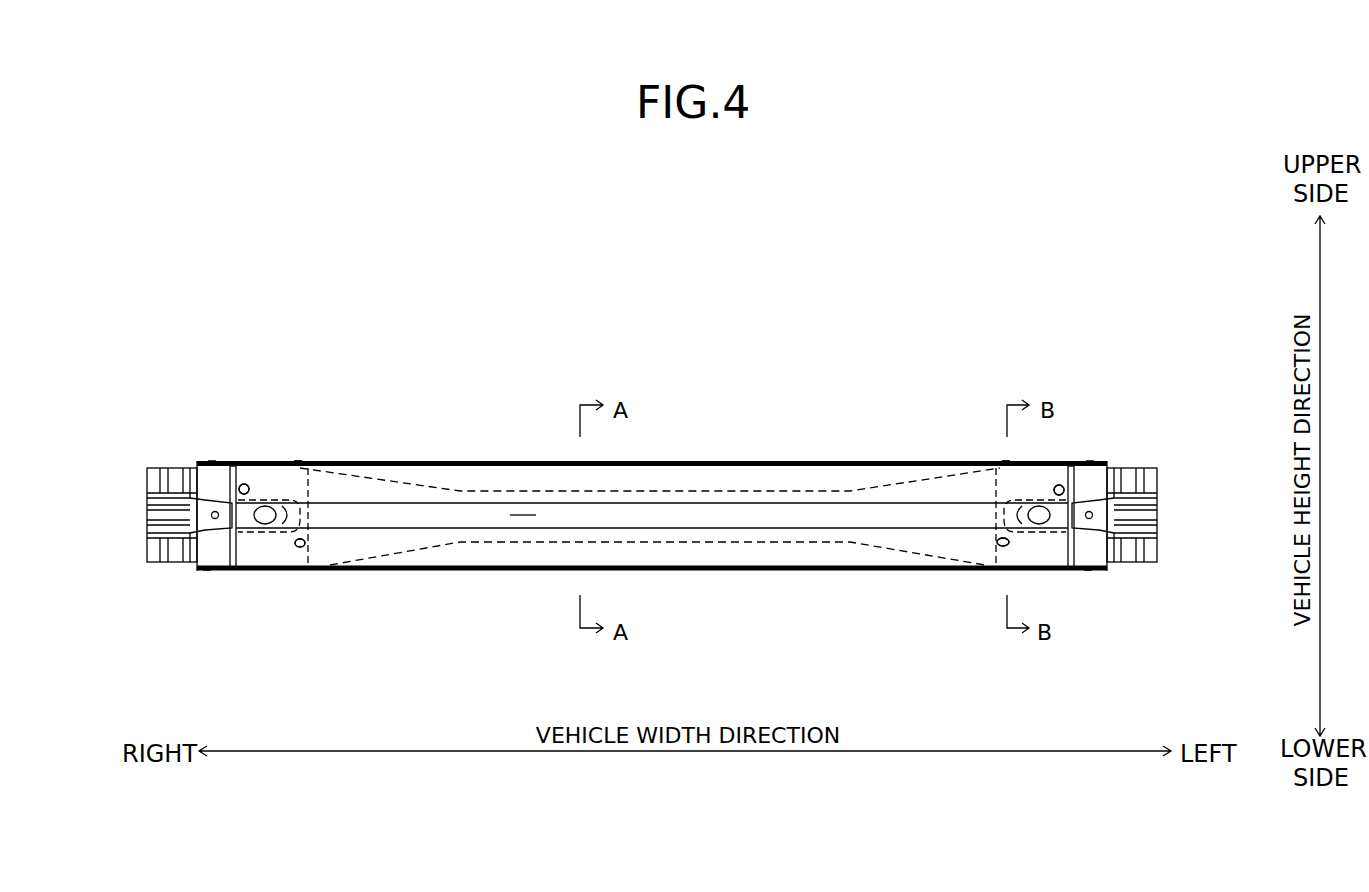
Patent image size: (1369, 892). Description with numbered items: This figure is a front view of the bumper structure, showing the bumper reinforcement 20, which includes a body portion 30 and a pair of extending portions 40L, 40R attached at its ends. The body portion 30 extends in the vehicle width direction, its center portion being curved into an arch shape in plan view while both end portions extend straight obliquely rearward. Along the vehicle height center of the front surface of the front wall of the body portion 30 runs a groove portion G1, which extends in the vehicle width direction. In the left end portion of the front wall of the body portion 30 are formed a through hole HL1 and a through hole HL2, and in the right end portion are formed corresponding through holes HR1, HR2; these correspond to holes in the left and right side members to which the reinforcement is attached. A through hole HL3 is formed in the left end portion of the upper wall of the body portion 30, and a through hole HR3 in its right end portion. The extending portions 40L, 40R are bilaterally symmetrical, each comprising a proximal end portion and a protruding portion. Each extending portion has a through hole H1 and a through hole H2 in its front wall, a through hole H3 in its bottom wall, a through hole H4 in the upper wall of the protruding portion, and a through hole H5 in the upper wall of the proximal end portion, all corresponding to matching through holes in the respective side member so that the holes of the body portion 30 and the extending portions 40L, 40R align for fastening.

The bumper reinforcement 20 is at (549, 398).
The body portion 30 is at (490, 462).
The extending portion 40R is at (147, 548).
The extending portion 40L is at (1157, 548).
The through hole HR1 is at (245, 484).
The through hole HR2 is at (300, 548).
The through hole HR3 is at (298, 462).
The through hole HL1 is at (1062, 485).
The through hole HL2 is at (1002, 547).
The through hole HL3 is at (1005, 462).
The through hole H1 is at (667, 423).
The through hole H2 is at (641, 615).
The through hole H3 is at (207, 570).
The through hole H4 is at (212, 462).
The through hole H5 is at (651, 415).
The groove portion G1 is at (524, 514).